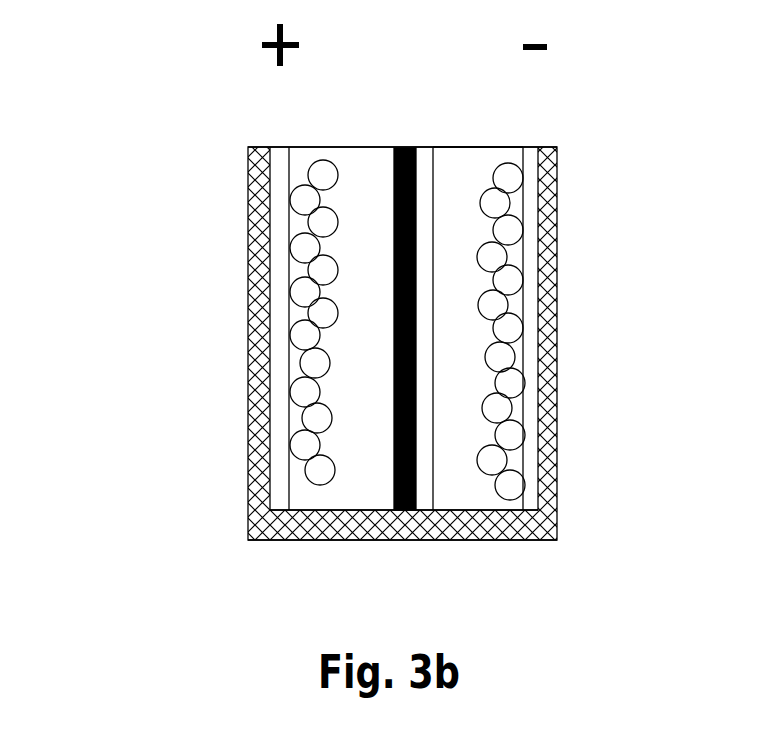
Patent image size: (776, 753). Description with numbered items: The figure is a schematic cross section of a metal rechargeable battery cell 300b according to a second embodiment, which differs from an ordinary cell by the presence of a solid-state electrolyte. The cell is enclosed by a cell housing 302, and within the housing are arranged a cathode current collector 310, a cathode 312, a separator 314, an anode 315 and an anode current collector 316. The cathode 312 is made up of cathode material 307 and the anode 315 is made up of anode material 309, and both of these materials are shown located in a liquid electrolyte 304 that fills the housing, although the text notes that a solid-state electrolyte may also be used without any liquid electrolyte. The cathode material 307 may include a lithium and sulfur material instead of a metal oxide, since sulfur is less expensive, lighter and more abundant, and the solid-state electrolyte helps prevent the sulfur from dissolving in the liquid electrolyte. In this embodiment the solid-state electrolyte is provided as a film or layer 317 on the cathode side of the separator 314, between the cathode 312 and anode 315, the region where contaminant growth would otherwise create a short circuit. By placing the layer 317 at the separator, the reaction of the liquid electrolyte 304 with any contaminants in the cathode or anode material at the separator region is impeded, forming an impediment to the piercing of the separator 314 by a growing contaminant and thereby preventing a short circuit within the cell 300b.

The metal rechargeable battery cell 300b is at (581, 395).
The cell housing 302 is at (553, 318).
The liquid electrolyte 304 is at (468, 495).
The cathode material 307 is at (308, 194).
The anode material 309 is at (508, 230).
The cathode current collector 310 is at (276, 176).
The cathode 312 is at (368, 146).
The separator 314 is at (430, 147).
The anode 315 is at (472, 166).
The anode current collector 316 is at (533, 198).
The solid-state electrolyte layer 317 is at (410, 542).